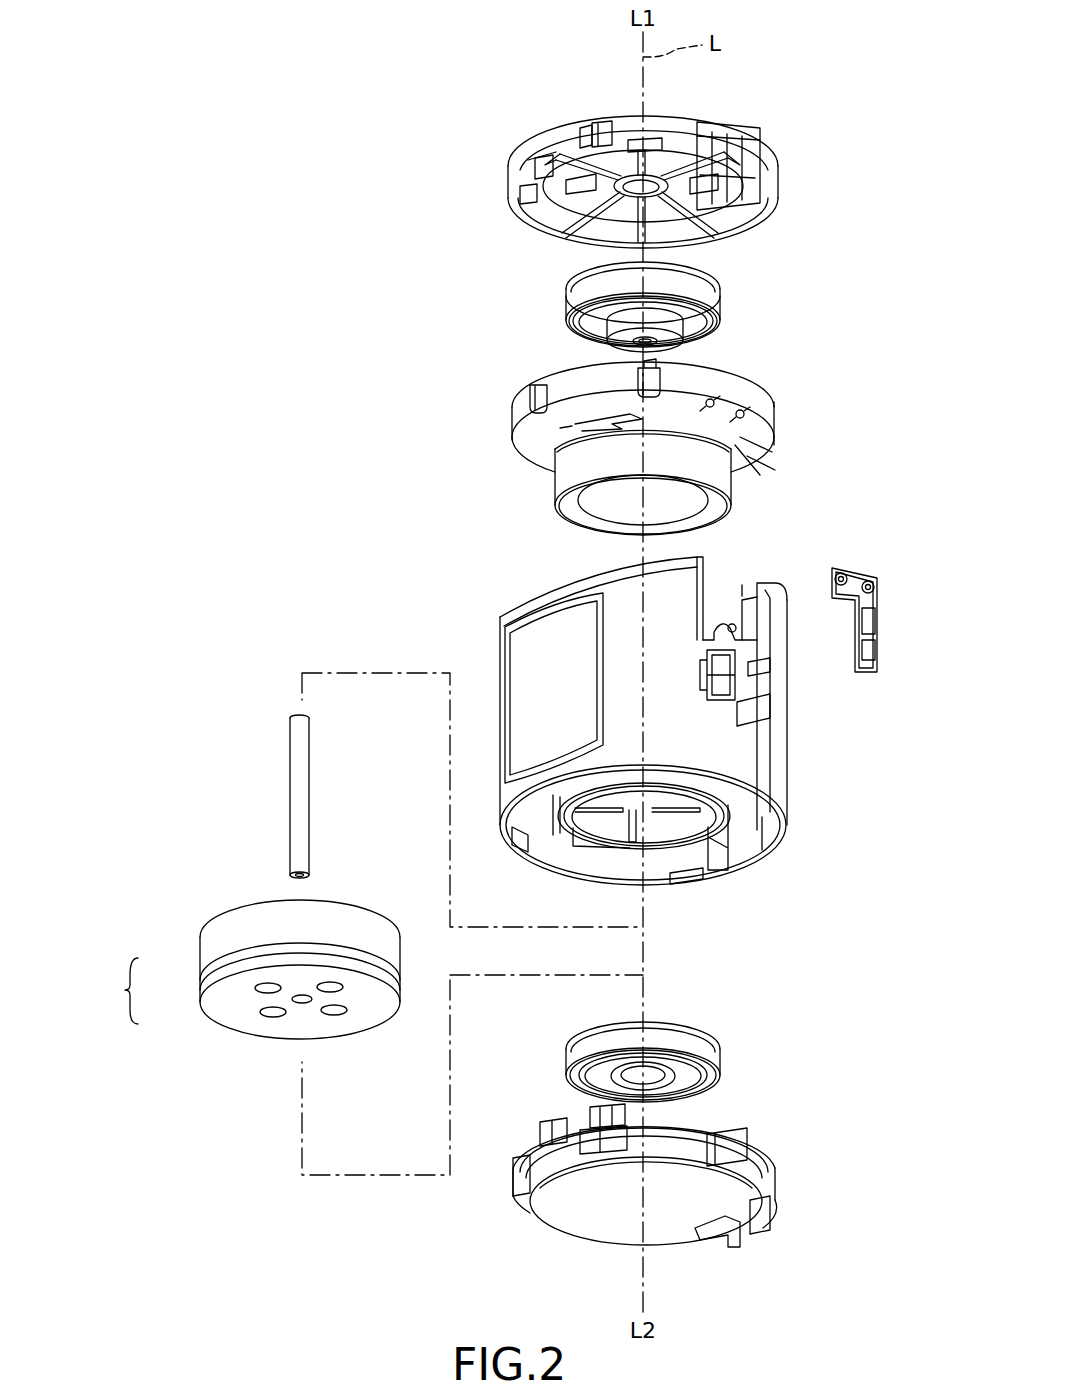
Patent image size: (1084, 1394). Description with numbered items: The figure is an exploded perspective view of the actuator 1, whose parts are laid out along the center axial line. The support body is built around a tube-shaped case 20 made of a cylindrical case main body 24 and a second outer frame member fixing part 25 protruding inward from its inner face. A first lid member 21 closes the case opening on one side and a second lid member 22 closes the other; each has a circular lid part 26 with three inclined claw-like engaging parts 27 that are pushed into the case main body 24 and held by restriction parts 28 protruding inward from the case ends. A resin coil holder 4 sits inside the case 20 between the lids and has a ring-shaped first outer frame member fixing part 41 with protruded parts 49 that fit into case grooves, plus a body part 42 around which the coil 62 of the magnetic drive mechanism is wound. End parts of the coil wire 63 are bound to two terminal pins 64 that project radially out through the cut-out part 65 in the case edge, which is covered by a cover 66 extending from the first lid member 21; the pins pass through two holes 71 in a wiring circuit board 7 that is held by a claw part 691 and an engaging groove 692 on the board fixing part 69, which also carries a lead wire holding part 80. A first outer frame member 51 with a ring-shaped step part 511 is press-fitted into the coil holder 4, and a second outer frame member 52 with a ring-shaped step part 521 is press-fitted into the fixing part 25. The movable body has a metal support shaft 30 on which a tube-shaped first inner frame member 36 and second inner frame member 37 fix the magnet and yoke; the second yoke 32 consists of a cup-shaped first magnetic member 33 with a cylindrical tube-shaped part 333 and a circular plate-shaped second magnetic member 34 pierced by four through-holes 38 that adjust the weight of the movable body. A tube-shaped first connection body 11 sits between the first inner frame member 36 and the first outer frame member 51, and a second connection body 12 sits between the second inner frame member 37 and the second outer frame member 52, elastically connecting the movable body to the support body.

The actuator 1 is at (264, 130).
The coil holder 4 is at (688, 438).
The wiring circuit board 7 is at (879, 593).
The first connection body 11 is at (672, 313).
The second connection body 12 is at (692, 1080).
The case 20 is at (704, 723).
The first lid member 21 is at (700, 152).
The second lid member 22 is at (768, 1208).
The case main body 24 is at (775, 784).
The second outer frame member fixing part 25 is at (700, 823).
The lid part 26 is at (567, 131).
The engaging part 27 is at (598, 125).
The restriction part 28 is at (516, 845).
The support shaft 30 is at (290, 784).
The second yoke 32 is at (241, 975).
The first magnetic member 33 is at (206, 953).
The second magnetic member 34 is at (228, 1011).
The first inner frame member 36 is at (612, 322).
The second inner frame member 37 is at (653, 1019).
The through-hole 38 is at (268, 994).
The first outer frame member fixing part 41 is at (530, 458).
The body part 42 is at (718, 509).
The protruded part 49 is at (540, 394).
The first outer frame member 51 is at (684, 296).
The second outer frame member 52 is at (729, 1032).
The coil 62 is at (572, 466).
The coil wire 63 is at (746, 451).
The terminal pin 64 is at (713, 404).
The cut-out part 65 is at (758, 577).
The cover 66 is at (772, 111).
The board fixing part 69 is at (753, 685).
The hole 71 is at (868, 582).
The lead wire holding part 80 is at (720, 698).
The tube-shaped part 333 is at (383, 933).
The ring-shaped step part 511 is at (717, 318).
The ring-shaped step part 521 is at (692, 1023).
The claw part 691 is at (733, 625).
The engaging groove 692 is at (740, 713).